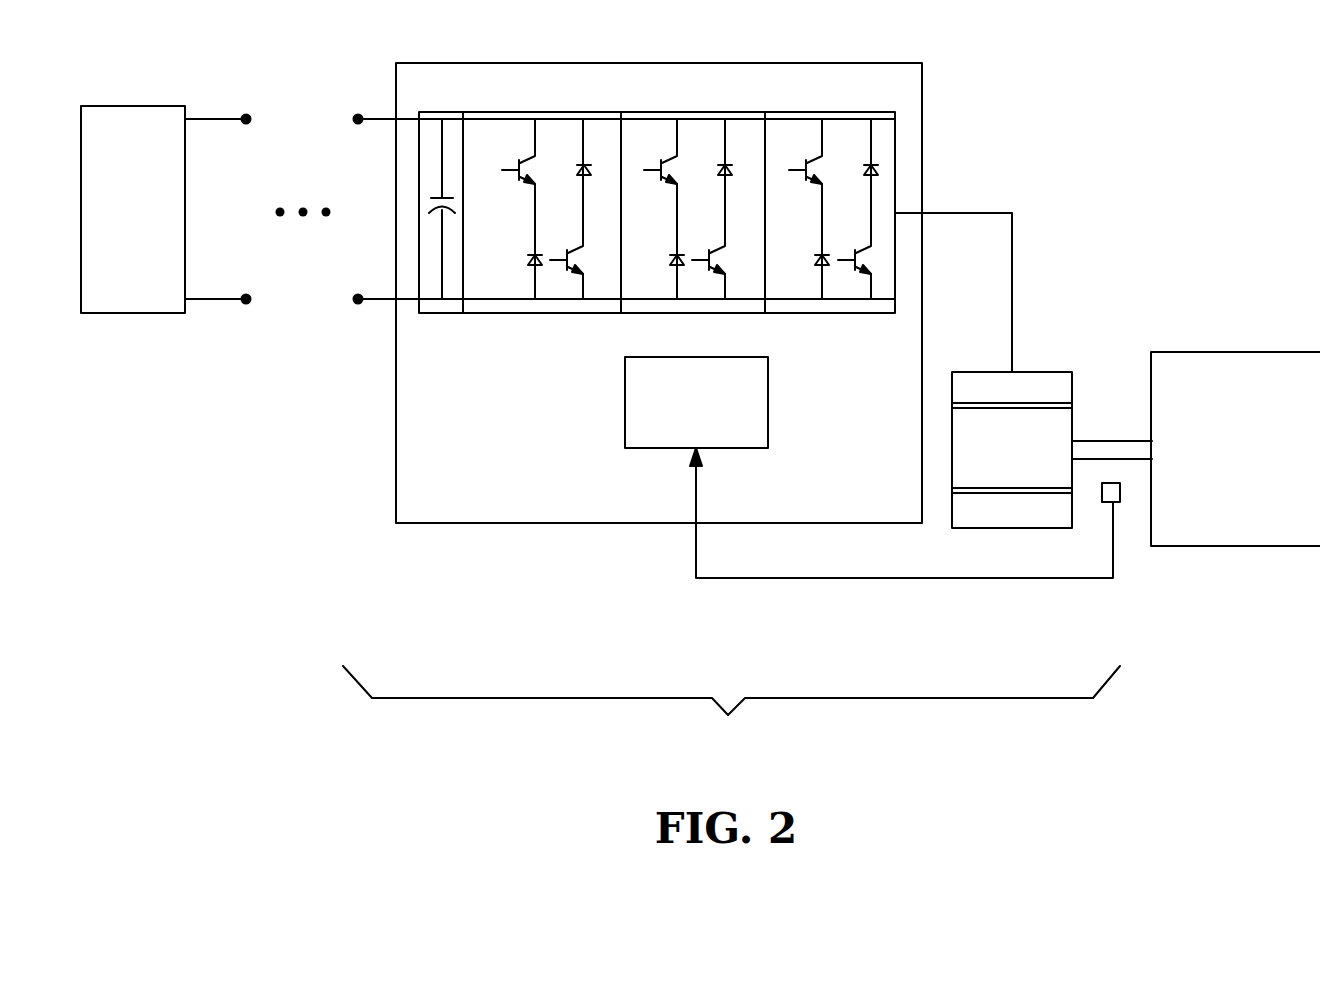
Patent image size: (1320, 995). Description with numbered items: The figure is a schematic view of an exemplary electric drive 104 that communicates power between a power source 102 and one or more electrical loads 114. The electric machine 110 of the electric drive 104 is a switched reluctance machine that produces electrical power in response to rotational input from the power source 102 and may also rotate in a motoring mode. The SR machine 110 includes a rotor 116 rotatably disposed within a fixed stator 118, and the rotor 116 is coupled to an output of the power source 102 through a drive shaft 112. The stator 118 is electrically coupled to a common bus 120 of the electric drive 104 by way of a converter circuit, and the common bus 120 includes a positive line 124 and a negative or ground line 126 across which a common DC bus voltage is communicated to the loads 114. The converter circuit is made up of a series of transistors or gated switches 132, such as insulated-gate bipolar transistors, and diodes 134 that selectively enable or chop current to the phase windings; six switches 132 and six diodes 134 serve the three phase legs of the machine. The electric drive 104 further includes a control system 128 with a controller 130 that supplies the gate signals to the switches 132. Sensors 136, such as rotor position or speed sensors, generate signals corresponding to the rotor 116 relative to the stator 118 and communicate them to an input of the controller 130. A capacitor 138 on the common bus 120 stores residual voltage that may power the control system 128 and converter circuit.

The power source 102 is at (1228, 378).
The electric drive 104 is at (731, 707).
The electric machine 110 is at (1039, 346).
The drive shaft 112 is at (1108, 446).
The electrical load 114 is at (108, 298).
The rotor 116 is at (972, 443).
The stator 118 is at (972, 395).
The common bus 120 is at (358, 118).
The positive line 124 is at (383, 118).
The negative line 126 is at (381, 298).
The control system 128 is at (403, 525).
The controller 130 is at (625, 415).
The switches 132 is at (517, 163).
The diodes 134 is at (580, 165).
The sensors 136 is at (1113, 497).
The capacitor 138 is at (434, 196).